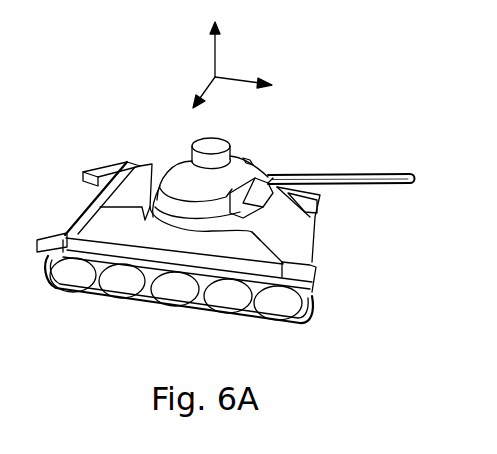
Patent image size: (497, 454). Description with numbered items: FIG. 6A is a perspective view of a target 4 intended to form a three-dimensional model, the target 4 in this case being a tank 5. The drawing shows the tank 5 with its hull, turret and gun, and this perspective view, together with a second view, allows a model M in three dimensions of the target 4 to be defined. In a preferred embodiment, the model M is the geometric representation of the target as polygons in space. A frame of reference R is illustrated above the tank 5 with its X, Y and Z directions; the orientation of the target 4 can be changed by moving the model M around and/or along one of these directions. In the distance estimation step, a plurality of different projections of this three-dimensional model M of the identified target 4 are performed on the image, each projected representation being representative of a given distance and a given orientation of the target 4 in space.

The target 4 is at (226, 193).
The tank 5 is at (310, 243).
The model M is at (273, 137).
The frame of reference R is at (198, 67).